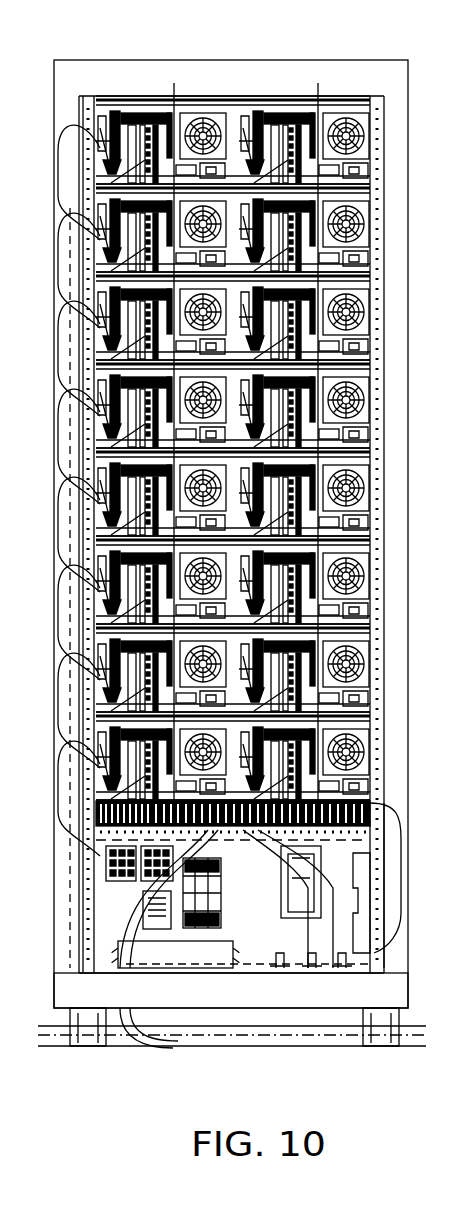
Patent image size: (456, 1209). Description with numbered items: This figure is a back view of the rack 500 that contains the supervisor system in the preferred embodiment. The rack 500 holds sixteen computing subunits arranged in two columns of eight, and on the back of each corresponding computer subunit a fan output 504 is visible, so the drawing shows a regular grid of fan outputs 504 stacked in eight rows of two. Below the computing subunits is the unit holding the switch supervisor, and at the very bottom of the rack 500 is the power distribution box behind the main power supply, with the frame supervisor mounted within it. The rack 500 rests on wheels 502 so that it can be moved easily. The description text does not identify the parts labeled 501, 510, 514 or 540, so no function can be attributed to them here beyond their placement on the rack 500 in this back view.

The rack 500 is at (217, 52).
The cabinet side panel 501 is at (23, 71).
The wheels 502 is at (18, 111).
The fan outputs 504 is at (355, 115).
The terminal strip 540 is at (82, 811).
The controller device 510 is at (310, 847).
The base 514 is at (72, 965).